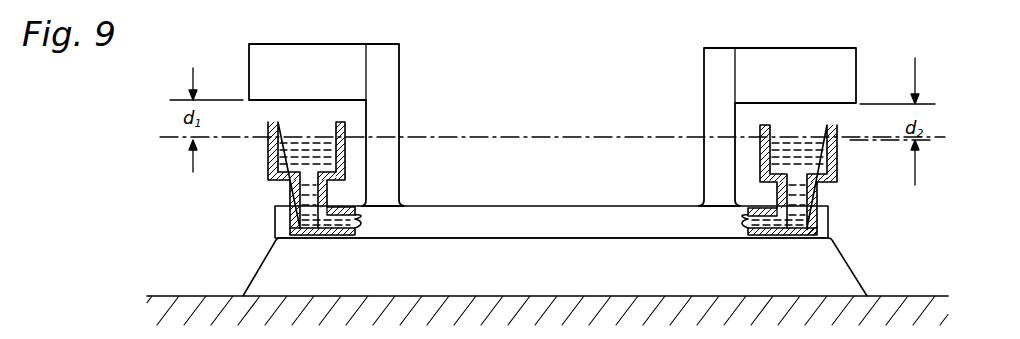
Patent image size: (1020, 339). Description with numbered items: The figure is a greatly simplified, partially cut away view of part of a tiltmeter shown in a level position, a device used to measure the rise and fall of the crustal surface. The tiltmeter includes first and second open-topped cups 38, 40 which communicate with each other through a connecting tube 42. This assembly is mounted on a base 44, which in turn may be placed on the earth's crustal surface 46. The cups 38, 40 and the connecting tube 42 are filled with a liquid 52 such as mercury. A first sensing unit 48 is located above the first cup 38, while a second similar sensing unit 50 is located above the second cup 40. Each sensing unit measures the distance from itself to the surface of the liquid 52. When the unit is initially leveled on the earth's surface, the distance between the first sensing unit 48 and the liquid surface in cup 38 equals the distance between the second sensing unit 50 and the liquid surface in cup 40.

The first open-topped cup 38 is at (273, 145).
The second open-topped cup 40 is at (837, 178).
The connecting tube 42 is at (522, 206).
The base 44 is at (823, 262).
The earth's crustal surface 46 is at (172, 295).
The first sensing unit 48 is at (332, 44).
The second sensing unit 50 is at (804, 48).
The liquid 52 is at (302, 152).